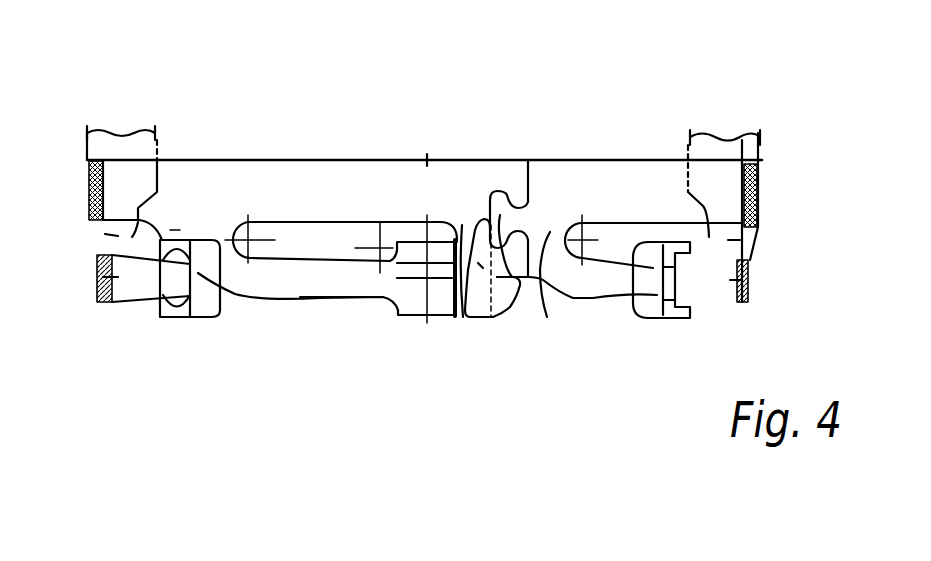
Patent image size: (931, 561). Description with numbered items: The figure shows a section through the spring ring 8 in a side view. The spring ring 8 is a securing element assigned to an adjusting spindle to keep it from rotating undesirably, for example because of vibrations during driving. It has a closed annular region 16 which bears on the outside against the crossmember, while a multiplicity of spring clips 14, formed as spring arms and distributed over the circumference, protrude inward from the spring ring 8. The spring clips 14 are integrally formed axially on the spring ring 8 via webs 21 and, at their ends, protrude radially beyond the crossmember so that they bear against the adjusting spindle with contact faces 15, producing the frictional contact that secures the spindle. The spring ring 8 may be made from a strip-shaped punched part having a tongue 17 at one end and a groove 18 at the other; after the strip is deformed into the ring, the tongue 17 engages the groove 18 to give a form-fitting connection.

The spring ring 8 is at (664, 148).
The spring clips 14 is at (313, 277).
The contact faces 15 is at (443, 238).
The closed annular region 16 is at (333, 180).
The tongue 17 is at (515, 312).
The groove 18 is at (463, 320).
The webs 21 is at (541, 282).